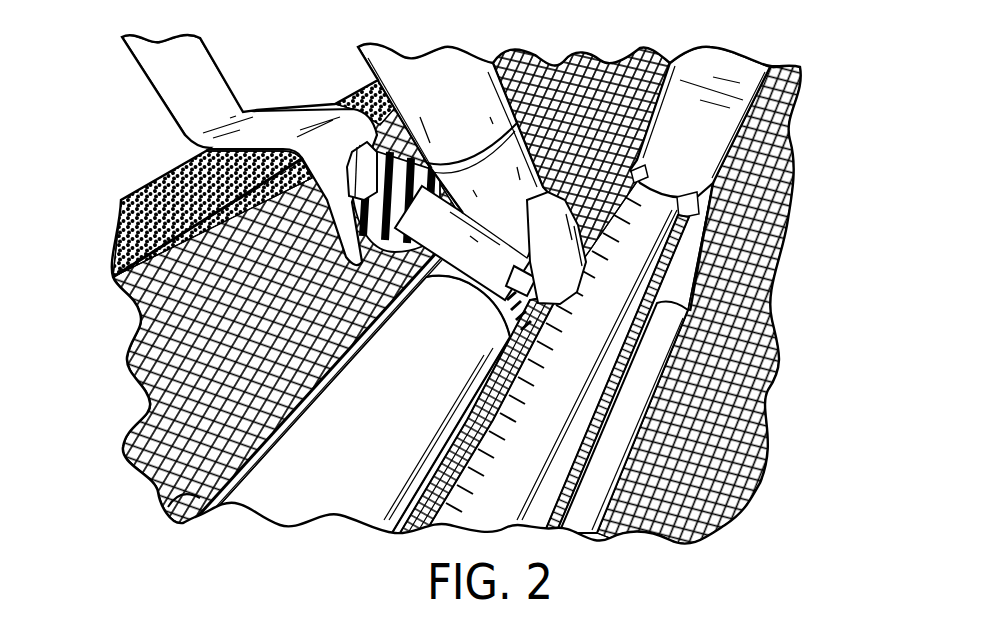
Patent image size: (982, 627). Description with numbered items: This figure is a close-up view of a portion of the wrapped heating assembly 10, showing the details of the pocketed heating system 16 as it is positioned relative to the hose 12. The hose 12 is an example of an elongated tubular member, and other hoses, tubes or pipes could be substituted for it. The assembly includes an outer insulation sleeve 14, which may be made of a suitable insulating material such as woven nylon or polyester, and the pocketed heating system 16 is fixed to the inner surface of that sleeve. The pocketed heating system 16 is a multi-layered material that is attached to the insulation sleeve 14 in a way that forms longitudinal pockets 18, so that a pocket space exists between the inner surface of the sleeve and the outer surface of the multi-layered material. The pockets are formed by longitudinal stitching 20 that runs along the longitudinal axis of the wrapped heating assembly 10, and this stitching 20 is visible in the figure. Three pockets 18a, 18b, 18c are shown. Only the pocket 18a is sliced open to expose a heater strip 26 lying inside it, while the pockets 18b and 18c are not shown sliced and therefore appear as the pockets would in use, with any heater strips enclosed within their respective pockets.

The wrapped heating assembly 10 is at (836, 162).
The hose 12 is at (237, 500).
The outer insulation sleeve 14 is at (133, 222).
The pocketed heating system 16 is at (103, 372).
The longitudinal pockets 18 is at (647, 326).
The pocket 18a is at (693, 512).
The pocket 18b is at (423, 527).
The pocket 18c is at (128, 475).
The longitudinal stitching 20 is at (113, 268).
The heater strip 26 is at (587, 523).